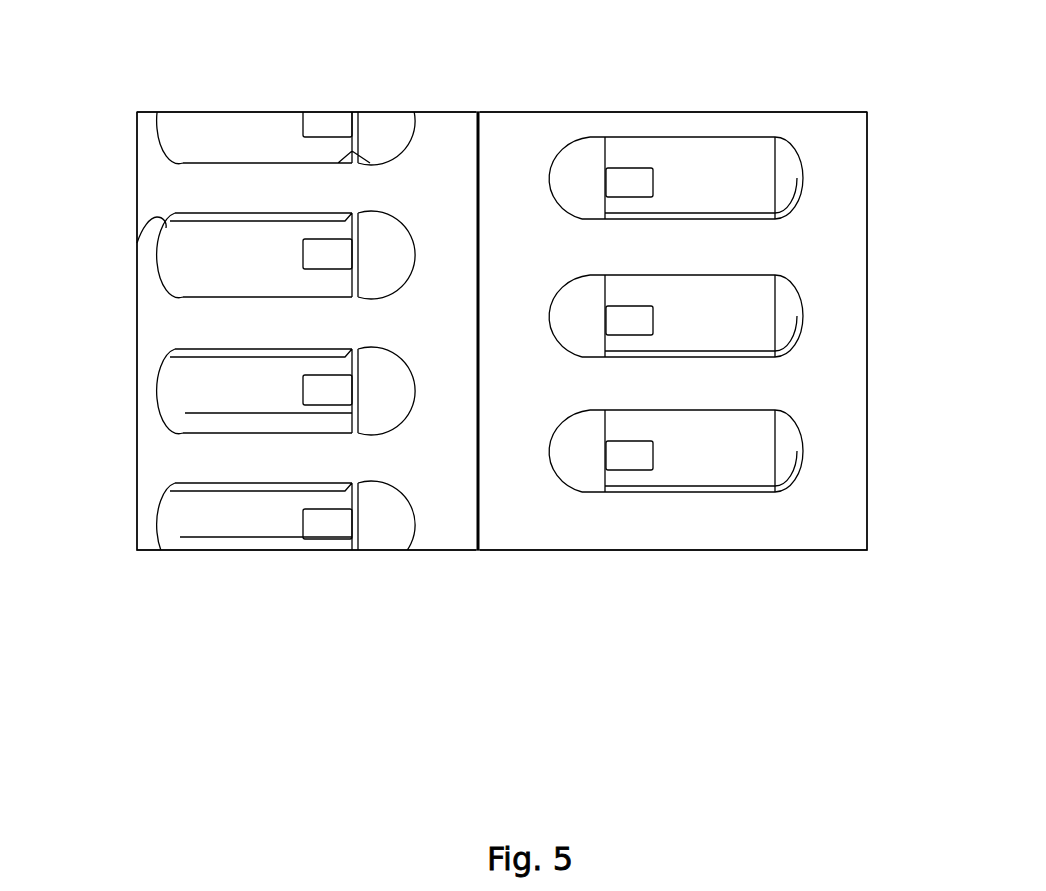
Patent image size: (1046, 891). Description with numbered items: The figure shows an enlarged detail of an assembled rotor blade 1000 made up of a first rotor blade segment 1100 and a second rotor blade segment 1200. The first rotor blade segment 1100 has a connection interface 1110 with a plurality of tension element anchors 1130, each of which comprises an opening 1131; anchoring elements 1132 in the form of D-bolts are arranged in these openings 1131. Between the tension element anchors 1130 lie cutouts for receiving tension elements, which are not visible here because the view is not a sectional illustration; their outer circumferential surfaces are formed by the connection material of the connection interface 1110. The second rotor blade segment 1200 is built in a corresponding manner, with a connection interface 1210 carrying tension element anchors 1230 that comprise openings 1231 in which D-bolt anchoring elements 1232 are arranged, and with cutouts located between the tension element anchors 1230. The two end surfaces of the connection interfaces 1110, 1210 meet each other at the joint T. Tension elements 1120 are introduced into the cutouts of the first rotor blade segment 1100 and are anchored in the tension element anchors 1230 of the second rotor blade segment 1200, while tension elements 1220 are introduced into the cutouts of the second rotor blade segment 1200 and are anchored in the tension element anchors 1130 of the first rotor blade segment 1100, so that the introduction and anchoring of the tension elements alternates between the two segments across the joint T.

The assembled rotor blade 1000 is at (517, 655).
The first rotor blade segment 1100 is at (120, 455).
The connection interface 1110 is at (437, 130).
The tension elements 1120 is at (637, 313).
The tension element anchors 1130 is at (192, 333).
The openings 1131 is at (137, 240).
The anchoring elements 1132 is at (380, 520).
The second rotor blade segment 1200 is at (862, 560).
The connection interface 1210 is at (533, 130).
The tension elements 1220 is at (320, 250).
The tension element anchors 1230 is at (778, 313).
The openings 1231 is at (753, 282).
The anchoring elements 1232 is at (595, 183).
The joint T is at (483, 515).